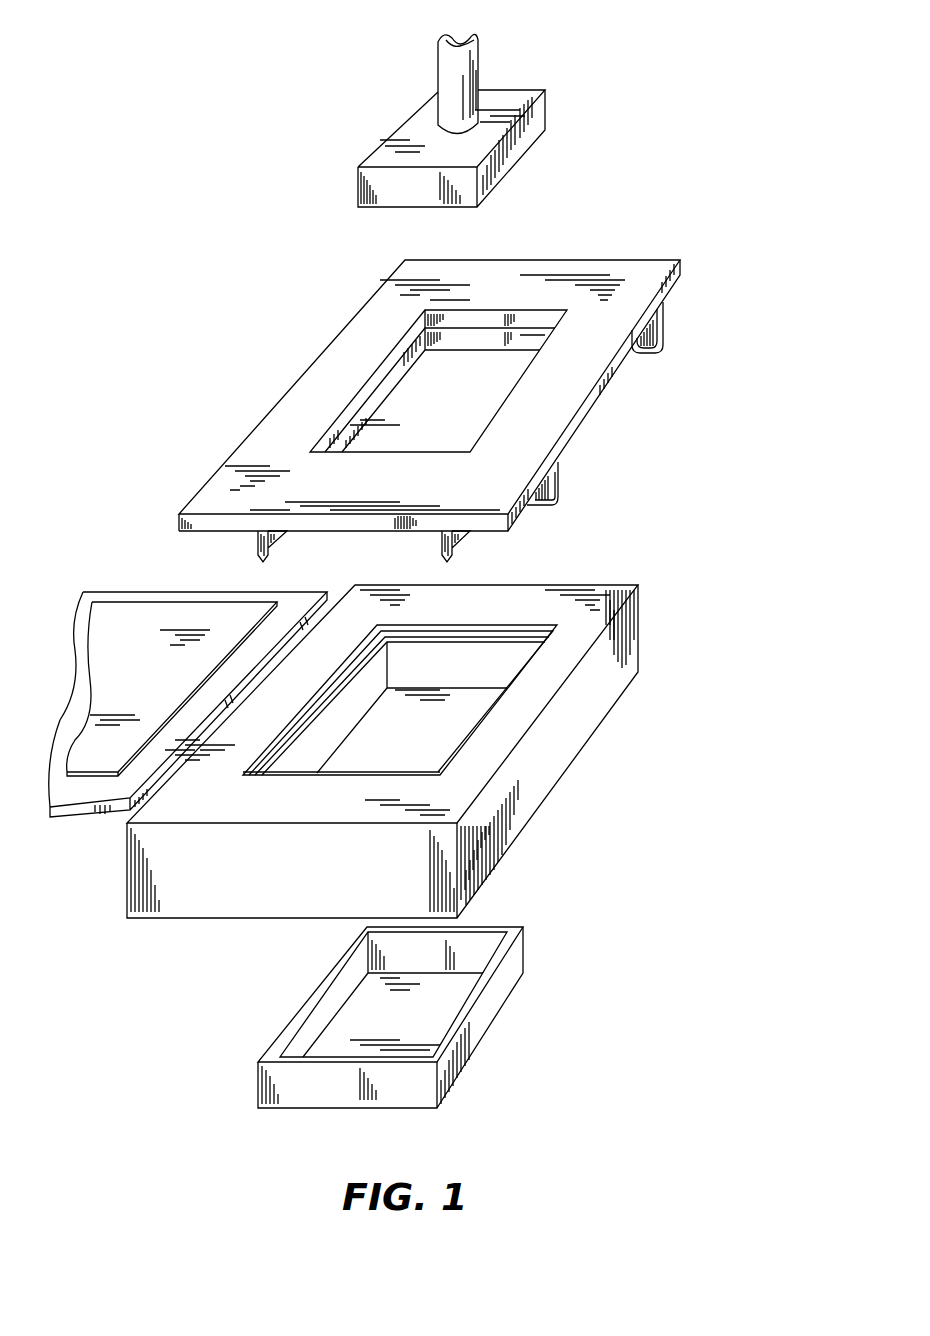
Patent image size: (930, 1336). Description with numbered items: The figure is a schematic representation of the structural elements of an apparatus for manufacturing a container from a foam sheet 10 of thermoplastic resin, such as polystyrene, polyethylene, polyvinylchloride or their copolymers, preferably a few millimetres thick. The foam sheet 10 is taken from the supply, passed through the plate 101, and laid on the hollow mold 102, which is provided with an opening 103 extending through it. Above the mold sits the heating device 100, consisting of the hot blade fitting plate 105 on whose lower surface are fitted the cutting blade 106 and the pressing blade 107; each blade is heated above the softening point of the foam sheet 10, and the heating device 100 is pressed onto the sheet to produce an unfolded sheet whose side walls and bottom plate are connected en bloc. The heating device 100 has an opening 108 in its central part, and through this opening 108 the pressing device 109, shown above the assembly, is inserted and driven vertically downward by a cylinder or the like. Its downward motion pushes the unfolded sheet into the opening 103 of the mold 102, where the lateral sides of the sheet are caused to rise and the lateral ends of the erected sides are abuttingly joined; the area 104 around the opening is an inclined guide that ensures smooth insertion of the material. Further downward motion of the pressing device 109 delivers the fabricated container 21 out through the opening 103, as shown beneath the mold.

The foam sheet 10 is at (142, 646).
The fabricated container 21 is at (475, 1023).
The heating device 100 is at (593, 277).
The plate 101 is at (87, 807).
The hollow mold 102 is at (560, 732).
The opening 103 is at (423, 759).
The inclined guide 104 is at (523, 637).
The hot blade fitting plate 105 is at (553, 423).
The cutting blade 106 is at (650, 337).
The pressing blade 107 is at (400, 372).
The opening 108 is at (448, 436).
The pressing device 109 is at (467, 67).